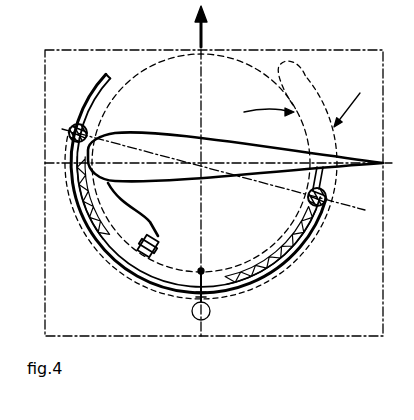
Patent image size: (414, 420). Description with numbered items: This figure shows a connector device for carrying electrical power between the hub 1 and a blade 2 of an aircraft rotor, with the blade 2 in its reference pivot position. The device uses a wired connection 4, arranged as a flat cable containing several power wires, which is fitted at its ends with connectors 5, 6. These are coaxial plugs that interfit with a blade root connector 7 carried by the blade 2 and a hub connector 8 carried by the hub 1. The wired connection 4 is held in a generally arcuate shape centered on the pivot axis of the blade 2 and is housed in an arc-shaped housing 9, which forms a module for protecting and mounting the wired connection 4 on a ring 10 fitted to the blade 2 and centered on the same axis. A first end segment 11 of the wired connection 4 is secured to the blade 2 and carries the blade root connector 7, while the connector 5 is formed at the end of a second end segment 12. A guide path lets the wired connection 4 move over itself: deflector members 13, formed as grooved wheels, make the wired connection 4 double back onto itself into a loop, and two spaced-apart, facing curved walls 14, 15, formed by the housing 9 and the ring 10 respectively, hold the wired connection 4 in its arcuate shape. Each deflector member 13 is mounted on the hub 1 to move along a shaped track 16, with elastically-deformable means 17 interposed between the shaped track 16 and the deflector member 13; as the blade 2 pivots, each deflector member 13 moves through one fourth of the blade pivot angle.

The hub 1 is at (350, 335).
The blade 2 is at (143, 133).
The wired connection 4 is at (267, 273).
The connector 5 is at (162, 297).
The connector 6 is at (140, 255).
The blade root connector 7 is at (161, 242).
The hub connector 8 is at (191, 308).
The housing 9 is at (313, 78).
The ring 10 is at (165, 62).
The first end segment 11 is at (137, 210).
The second end segment 12 is at (210, 304).
The deflector member 13 is at (77, 124).
The curved wall 14 is at (357, 100).
The curved wall 15 is at (256, 113).
The shaped track 16 is at (66, 200).
The elastically-deformable means 17 is at (81, 228).